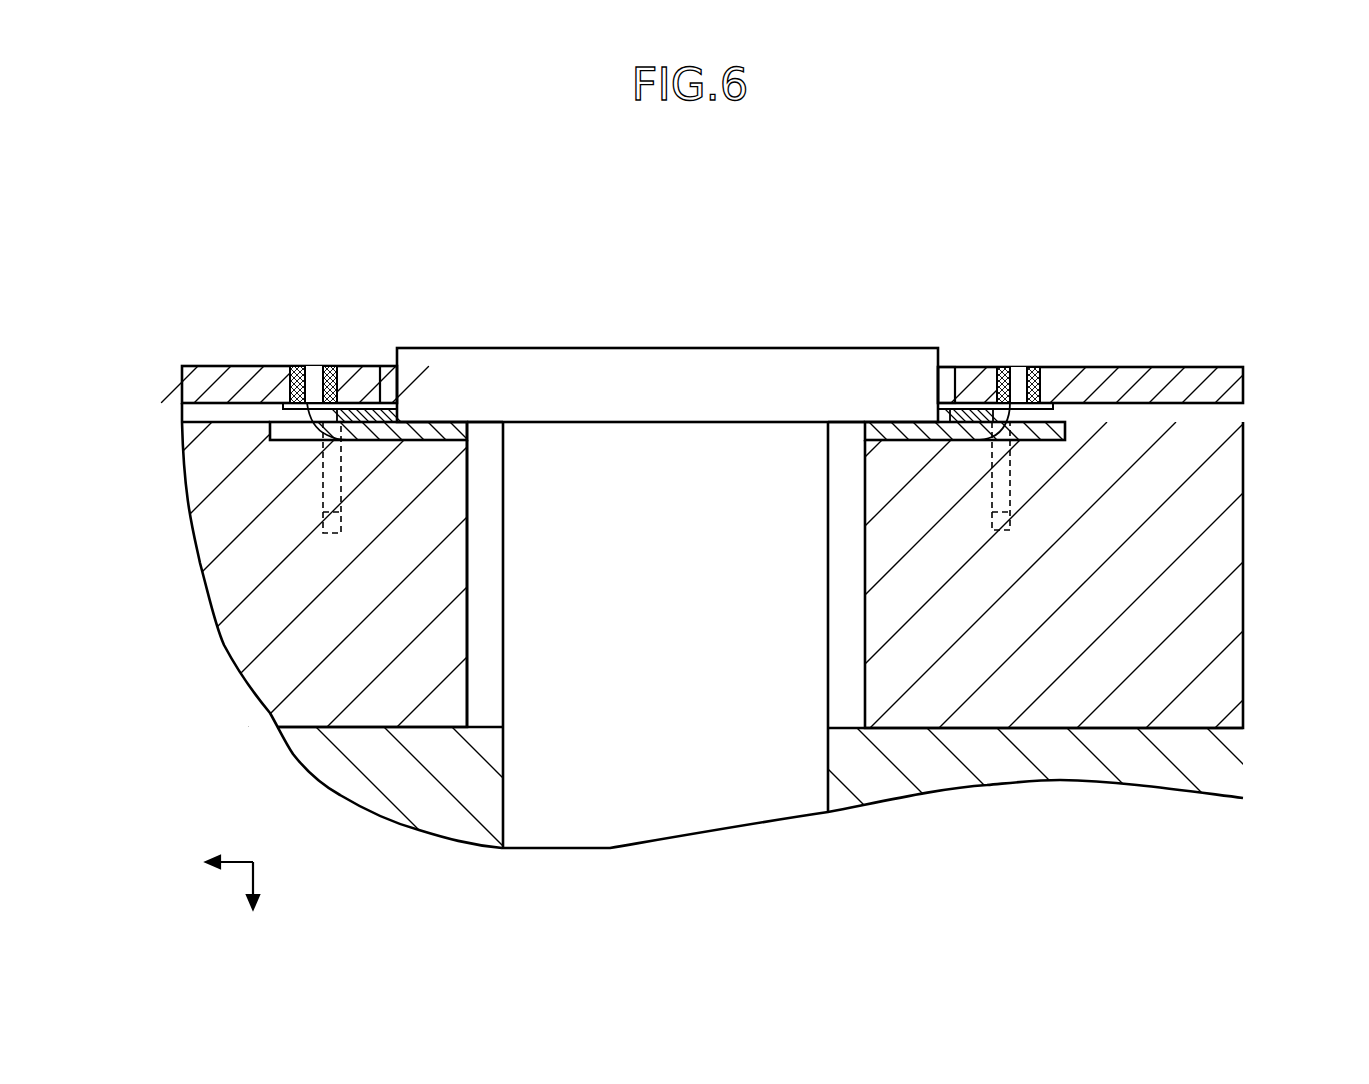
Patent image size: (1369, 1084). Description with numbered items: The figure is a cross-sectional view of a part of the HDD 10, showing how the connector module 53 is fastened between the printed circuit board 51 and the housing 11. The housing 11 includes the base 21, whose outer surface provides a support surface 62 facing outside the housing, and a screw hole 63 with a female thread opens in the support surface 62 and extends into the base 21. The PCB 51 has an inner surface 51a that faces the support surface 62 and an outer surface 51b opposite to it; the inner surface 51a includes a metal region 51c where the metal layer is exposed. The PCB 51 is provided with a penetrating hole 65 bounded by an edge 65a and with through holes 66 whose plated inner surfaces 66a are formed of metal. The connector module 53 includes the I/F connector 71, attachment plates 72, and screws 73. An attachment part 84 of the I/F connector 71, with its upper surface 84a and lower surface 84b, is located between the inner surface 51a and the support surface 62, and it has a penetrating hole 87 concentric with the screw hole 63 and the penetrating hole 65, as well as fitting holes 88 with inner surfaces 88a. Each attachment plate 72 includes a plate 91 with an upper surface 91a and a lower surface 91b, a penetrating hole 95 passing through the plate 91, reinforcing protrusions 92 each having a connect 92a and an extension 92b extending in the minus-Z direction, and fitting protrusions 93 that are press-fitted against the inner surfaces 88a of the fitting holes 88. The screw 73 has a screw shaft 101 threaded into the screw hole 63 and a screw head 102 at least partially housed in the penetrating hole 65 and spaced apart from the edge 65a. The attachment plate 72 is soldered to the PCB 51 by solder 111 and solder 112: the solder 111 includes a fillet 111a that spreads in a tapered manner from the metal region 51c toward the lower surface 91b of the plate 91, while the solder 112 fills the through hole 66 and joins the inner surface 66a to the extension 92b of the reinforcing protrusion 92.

The HDD 10 is at (188, 222).
The housing 11 is at (406, 828).
The base 21 is at (452, 832).
The printed circuit board 51 is at (1129, 347).
The inner surface 51a is at (1241, 405).
The outer surface 51b is at (1129, 368).
The metal region 51c is at (1129, 347).
The connector module 53 is at (351, 673).
The support surface 62 is at (351, 673).
The screw hole 63 is at (840, 673).
The penetrating hole 65 is at (950, 364).
The edge of penetrating hole 65a is at (378, 403).
The through hole 66 is at (660, 337).
The inner surface of through hole 66a is at (318, 403).
The interface connector 71 is at (351, 673).
The attachment plate 72 is at (667, 344).
The screw 73 is at (667, 344).
The attachment part 84 is at (351, 673).
The upper surface 84a is at (347, 740).
The lower surface 84b is at (437, 437).
The penetrating hole 87 is at (508, 610).
The fitting hole 88 is at (709, 658).
The inner surface of fitting hole 88a is at (709, 658).
The plate 91 is at (457, 407).
The upper surface 91a is at (981, 596).
The lower surface 91b is at (868, 420).
The reinforcing protrusion 92 is at (662, 318).
The connect 92a is at (318, 422).
The extension 92b is at (662, 318).
The fitting protrusion 93 is at (327, 477).
The penetrating hole 95 is at (488, 420).
The screw shaft 101 is at (840, 673).
The screw head 102 is at (667, 344).
The solder 111 is at (714, 385).
The fillet 111a is at (714, 385).
The solder 112 is at (283, 398).